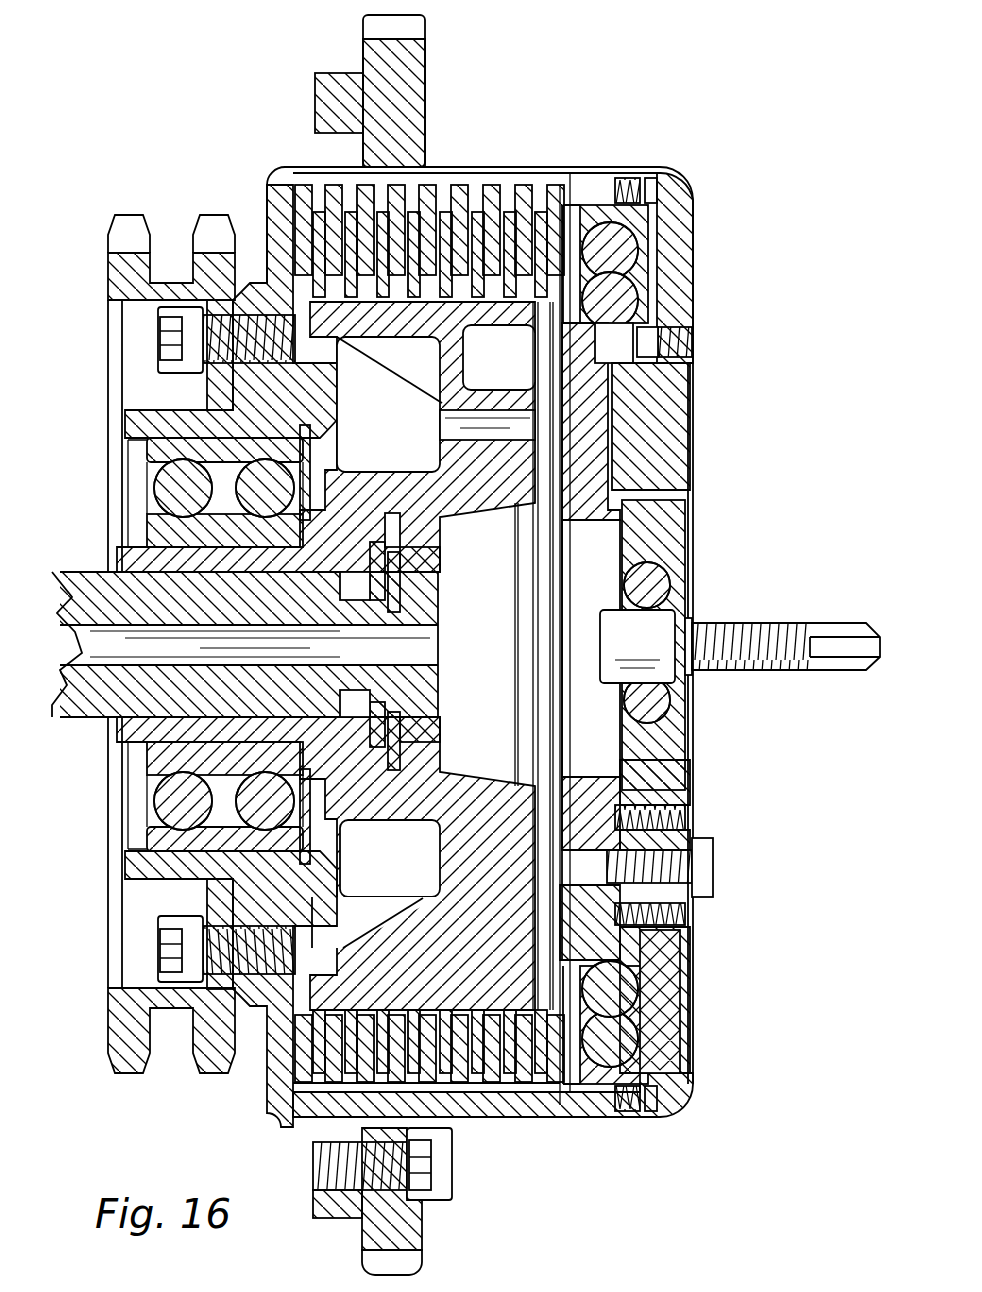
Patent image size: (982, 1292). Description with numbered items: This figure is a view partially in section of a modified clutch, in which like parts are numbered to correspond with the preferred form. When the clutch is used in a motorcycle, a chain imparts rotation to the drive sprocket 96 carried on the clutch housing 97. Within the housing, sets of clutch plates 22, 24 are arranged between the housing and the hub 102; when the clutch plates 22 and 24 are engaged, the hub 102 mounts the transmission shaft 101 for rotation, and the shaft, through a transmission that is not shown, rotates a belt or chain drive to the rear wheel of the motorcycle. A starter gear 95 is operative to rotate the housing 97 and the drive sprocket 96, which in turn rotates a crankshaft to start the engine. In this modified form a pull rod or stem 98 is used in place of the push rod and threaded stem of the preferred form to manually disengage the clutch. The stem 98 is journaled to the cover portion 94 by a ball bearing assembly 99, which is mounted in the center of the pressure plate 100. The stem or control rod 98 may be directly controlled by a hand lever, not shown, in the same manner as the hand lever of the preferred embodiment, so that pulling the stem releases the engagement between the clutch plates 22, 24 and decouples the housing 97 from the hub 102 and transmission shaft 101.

The clutch plate 22 is at (552, 1082).
The clutch plate 24 is at (473, 1068).
The cover portion 94 is at (643, 492).
The starter gear 95 is at (370, 1240).
The drive sprocket 96 is at (118, 1052).
The clutch housing 97 is at (280, 1105).
The pull rod or stem 98 is at (762, 625).
The ball bearing assembly 99 is at (693, 548).
The pressure plate 100 is at (600, 405).
The transmission shaft 101 is at (108, 697).
The hub 102 is at (487, 907).